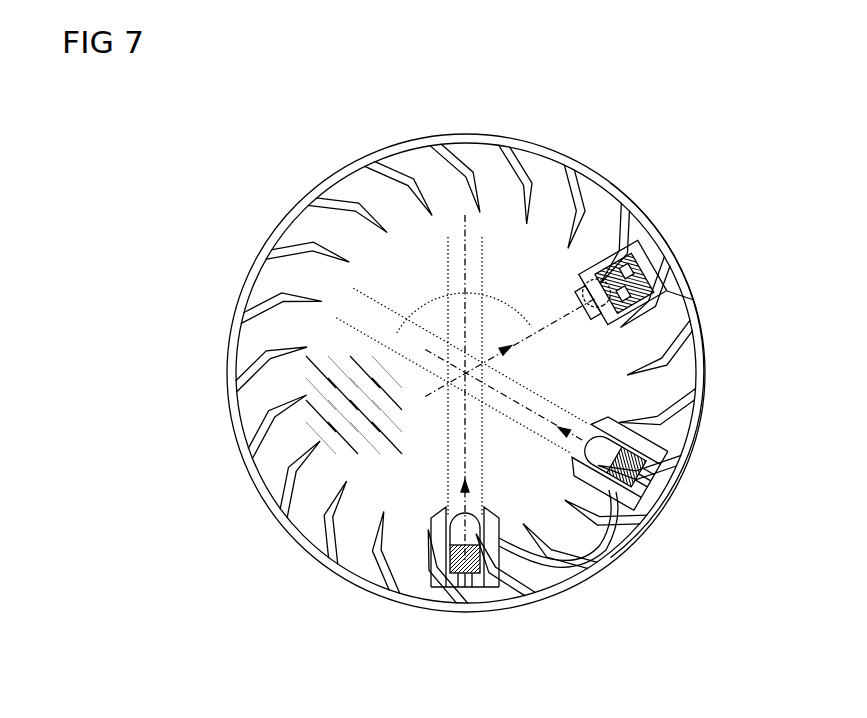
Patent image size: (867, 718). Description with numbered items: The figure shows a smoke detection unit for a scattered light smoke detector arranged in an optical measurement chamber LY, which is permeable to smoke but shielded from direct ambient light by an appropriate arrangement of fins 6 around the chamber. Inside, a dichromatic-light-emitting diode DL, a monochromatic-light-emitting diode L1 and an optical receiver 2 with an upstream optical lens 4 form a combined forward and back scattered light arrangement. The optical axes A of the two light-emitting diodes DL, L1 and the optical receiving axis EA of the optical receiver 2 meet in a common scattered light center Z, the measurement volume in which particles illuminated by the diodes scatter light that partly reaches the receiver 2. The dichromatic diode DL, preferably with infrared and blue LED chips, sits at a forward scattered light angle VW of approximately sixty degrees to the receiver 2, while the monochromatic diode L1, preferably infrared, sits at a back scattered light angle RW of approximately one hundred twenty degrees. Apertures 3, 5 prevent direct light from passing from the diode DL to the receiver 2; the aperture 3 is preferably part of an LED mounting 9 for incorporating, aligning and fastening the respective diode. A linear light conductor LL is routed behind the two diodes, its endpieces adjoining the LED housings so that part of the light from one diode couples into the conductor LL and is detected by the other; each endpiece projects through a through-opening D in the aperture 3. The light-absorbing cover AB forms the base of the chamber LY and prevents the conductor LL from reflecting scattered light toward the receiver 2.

The optical receiver 2 is at (607, 326).
The aperture 3 is at (488, 512).
The optical lens 4 is at (579, 326).
The aperture 5 is at (668, 291).
The fins 6 is at (700, 349).
The LED mounting 9 is at (444, 560).
The optical measurement chamber LY is at (684, 188).
The back scattered light angle RW is at (430, 297).
The forward scattered light angle VW is at (494, 312).
The optical receiving axis EA is at (574, 300).
The scattered light center Z is at (513, 369).
The cover AB is at (354, 405).
The optical axes A is at (447, 445).
The dichromatic-light-emitting diode DL is at (444, 518).
The through-opening D is at (501, 533).
The monochromatic-light-emitting diode L1 is at (582, 450).
The linear light conductor LL is at (622, 546).